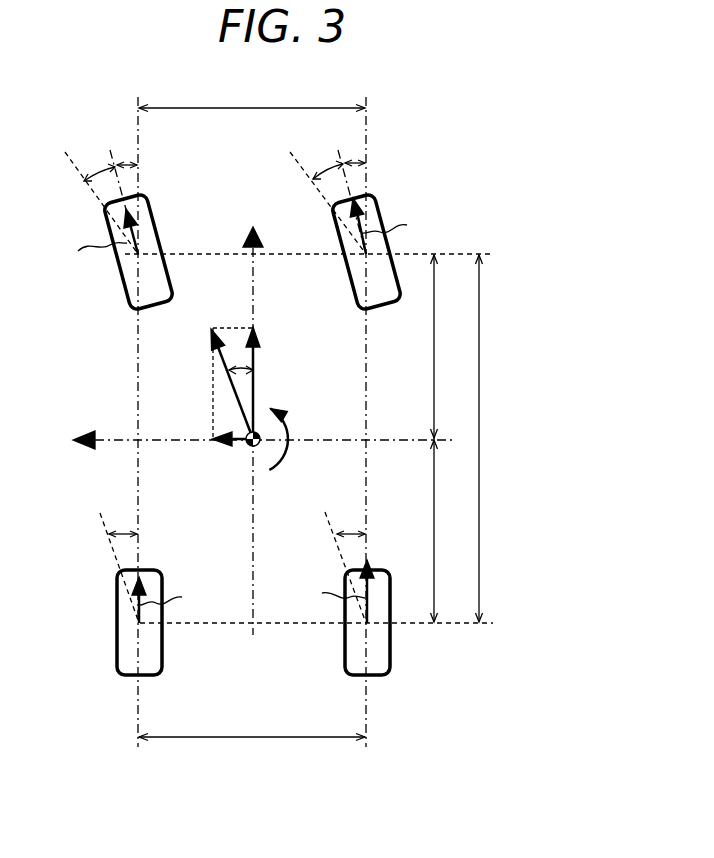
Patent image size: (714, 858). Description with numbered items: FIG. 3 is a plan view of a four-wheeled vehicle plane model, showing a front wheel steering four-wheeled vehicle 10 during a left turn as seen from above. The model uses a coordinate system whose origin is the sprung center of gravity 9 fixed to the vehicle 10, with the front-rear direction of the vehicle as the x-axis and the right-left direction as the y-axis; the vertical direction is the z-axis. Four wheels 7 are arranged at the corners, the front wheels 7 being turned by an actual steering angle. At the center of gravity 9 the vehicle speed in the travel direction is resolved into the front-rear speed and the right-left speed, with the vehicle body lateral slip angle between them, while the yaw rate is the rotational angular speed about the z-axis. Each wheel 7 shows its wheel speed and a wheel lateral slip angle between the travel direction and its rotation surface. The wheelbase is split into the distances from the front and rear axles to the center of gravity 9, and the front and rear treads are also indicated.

The wheel 7 is at (145, 200).
The sprung center of gravity 9 is at (250, 447).
The vehicle 10 is at (534, 354).